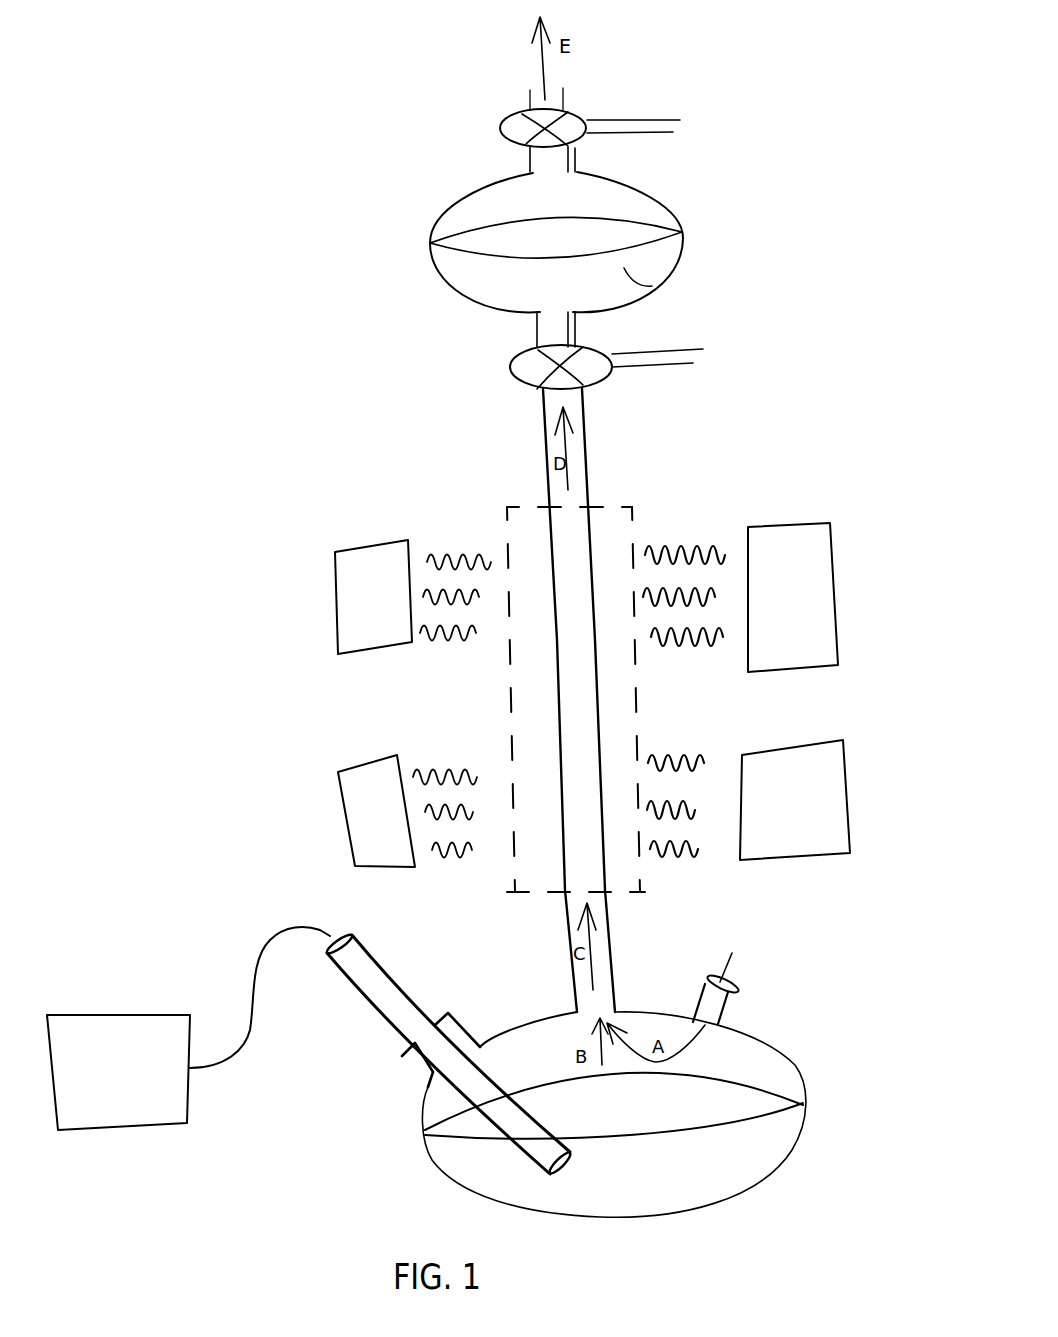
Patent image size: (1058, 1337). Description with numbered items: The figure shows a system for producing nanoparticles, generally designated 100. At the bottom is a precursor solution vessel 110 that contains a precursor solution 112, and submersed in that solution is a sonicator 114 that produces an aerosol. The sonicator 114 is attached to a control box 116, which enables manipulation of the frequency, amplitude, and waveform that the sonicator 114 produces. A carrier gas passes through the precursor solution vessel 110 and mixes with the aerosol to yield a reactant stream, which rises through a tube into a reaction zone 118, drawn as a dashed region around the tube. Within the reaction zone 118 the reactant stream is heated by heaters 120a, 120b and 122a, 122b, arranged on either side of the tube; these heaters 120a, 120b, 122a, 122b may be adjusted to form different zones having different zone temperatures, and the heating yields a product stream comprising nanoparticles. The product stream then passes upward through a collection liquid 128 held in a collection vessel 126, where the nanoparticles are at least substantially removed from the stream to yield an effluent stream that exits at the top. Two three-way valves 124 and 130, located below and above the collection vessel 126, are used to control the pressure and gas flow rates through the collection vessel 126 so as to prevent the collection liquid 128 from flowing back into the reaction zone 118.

The system for producing nanoparticles 100 is at (132, 151).
The precursor solution vessel 110 is at (782, 1056).
The precursor solution 112 is at (732, 1176).
The sonicator 114 is at (352, 985).
The control box 116 is at (128, 1130).
The reaction zone 118 is at (510, 893).
The heater 120a is at (365, 812).
The heater 120b is at (820, 803).
The heater 122a is at (345, 615).
The heater 122b is at (808, 602).
The three-way valve 124 is at (512, 368).
The collection vessel 126 is at (674, 228).
The collection liquid 128 is at (658, 266).
The three-way valve 130 is at (503, 133).